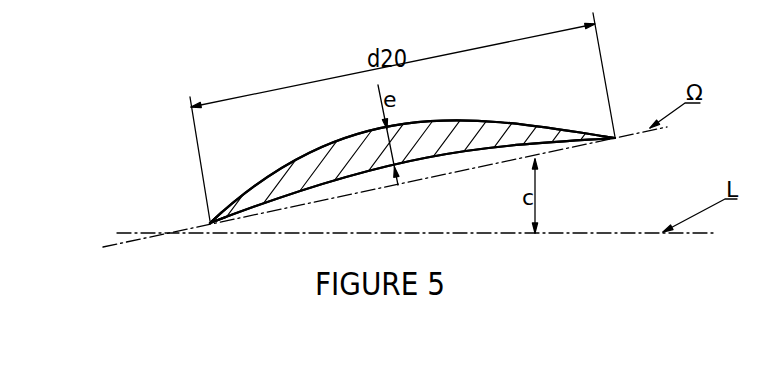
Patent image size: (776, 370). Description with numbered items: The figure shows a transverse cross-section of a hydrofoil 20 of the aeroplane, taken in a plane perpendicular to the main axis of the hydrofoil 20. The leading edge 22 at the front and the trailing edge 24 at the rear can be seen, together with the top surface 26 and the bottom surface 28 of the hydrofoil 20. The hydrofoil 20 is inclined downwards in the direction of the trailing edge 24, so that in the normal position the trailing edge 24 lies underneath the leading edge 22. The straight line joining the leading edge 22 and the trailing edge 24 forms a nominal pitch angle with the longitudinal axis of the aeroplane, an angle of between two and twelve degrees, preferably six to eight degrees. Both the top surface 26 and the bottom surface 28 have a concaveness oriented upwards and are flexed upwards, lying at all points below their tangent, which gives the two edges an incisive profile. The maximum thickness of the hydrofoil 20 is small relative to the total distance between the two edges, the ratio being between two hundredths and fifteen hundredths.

The hydrofoil 20 is at (462, 133).
The leading edge 22 is at (617, 136).
The trailing edge 24 is at (208, 222).
The top surface 26 is at (318, 150).
The bottom surface 28 is at (335, 180).